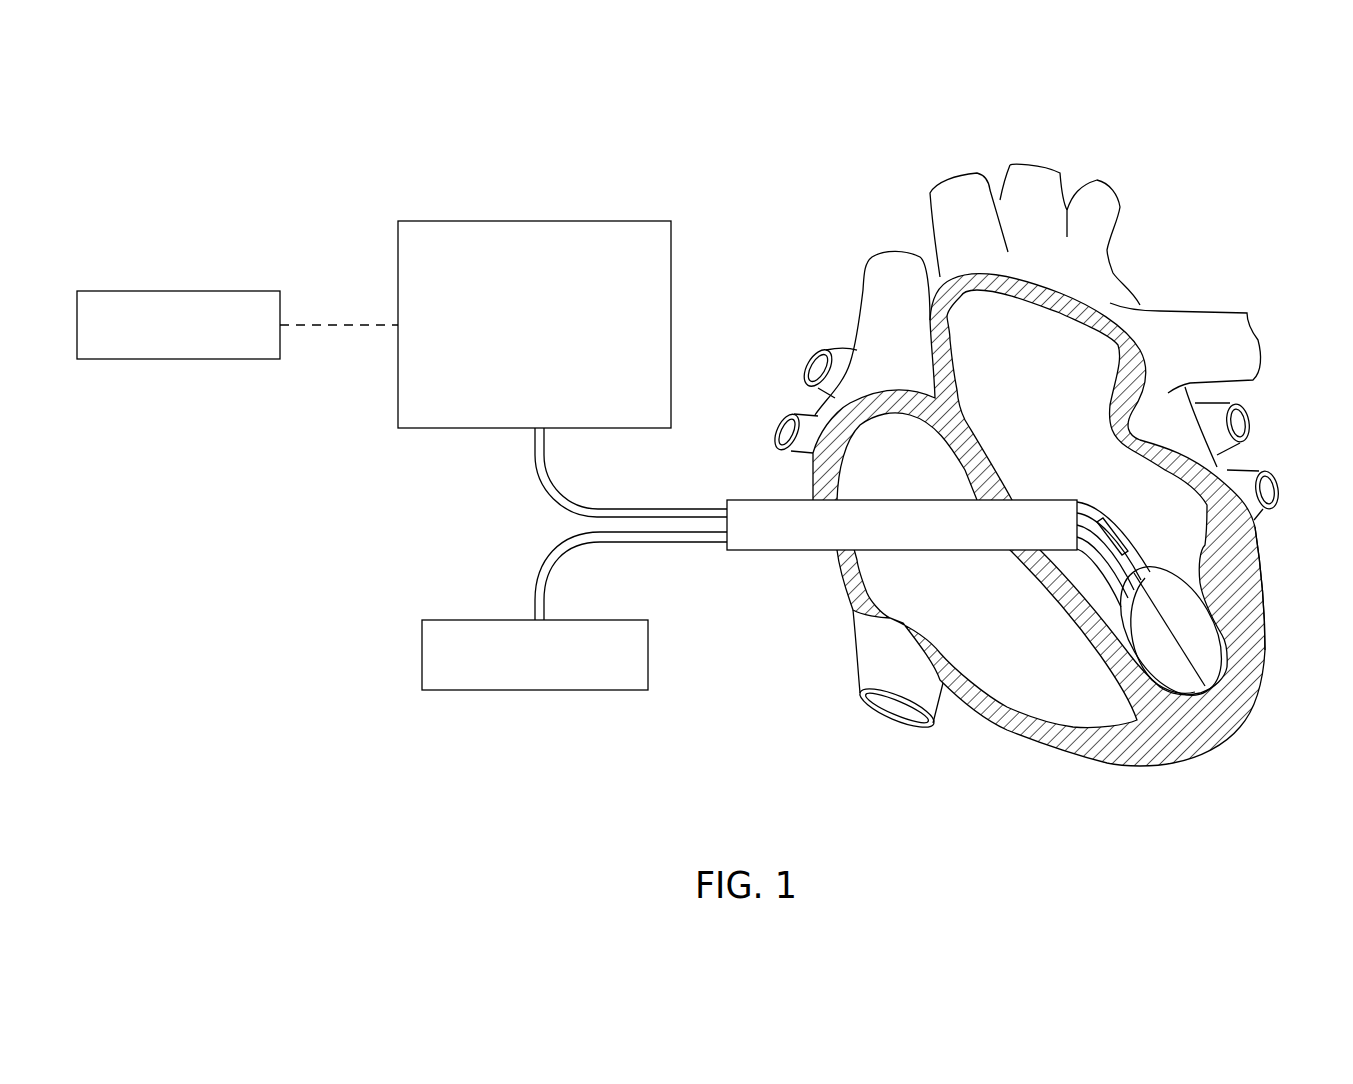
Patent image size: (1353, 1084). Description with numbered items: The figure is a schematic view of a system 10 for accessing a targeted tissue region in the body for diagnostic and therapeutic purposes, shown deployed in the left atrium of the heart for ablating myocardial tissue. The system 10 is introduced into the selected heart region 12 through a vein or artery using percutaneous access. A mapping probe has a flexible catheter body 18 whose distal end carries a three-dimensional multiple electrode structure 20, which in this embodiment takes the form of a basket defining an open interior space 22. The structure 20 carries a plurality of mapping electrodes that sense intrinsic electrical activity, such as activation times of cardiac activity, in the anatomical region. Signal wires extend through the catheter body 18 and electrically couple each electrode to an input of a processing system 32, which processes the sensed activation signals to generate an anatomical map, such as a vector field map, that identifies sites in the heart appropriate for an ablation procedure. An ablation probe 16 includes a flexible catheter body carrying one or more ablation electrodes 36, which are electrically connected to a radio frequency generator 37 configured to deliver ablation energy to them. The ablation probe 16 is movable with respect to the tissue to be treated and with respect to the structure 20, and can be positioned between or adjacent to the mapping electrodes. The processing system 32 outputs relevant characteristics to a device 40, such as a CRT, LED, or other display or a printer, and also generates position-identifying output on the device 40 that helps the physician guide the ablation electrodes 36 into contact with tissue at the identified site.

The system 10 is at (478, 145).
The selected heart region 12 is at (1190, 500).
The ablation probe 16 is at (1082, 558).
The flexible catheter body 18 is at (1102, 522).
The three-dimensional multiple electrode structure 20 is at (1237, 613).
The open interior space 22 is at (1183, 670).
The processing system 32 is at (533, 221).
The ablation electrode 36 is at (1110, 677).
The radio frequency generator 37 is at (535, 690).
The device 40 is at (175, 291).